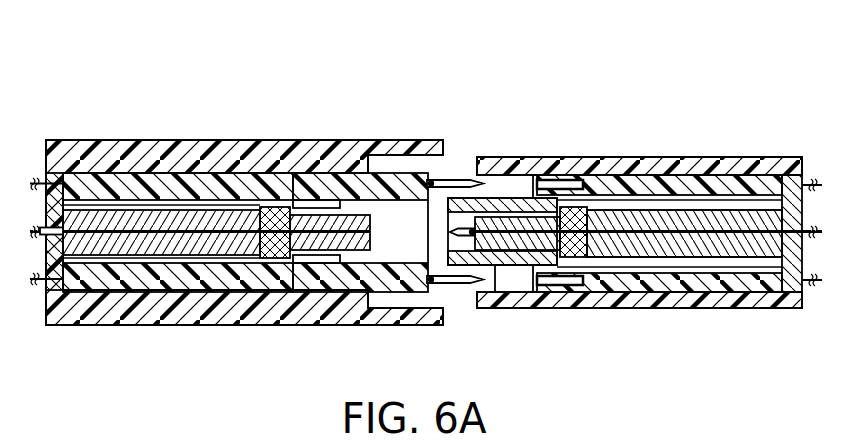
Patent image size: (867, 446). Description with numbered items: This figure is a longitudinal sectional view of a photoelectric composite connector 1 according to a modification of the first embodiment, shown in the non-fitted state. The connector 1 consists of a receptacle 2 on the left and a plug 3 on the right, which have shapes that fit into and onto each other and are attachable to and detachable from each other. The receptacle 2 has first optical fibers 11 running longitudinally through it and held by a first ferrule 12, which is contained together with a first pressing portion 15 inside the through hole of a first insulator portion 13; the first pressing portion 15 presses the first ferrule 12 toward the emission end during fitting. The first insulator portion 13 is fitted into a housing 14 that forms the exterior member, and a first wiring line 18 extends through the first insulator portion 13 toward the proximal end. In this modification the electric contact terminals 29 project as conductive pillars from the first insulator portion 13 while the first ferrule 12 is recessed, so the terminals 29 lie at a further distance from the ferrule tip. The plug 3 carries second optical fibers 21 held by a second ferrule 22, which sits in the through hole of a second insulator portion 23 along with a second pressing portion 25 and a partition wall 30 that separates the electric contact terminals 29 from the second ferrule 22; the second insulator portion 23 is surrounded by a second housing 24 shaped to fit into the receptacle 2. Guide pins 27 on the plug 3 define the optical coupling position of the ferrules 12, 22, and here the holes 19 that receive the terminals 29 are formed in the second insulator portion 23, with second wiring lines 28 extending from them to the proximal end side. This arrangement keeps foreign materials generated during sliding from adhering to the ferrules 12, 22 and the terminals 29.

The photoelectric composite connector 1 is at (430, 76).
The receptacle 2 is at (262, 98).
The plug 3 is at (594, 100).
The first optical fibers 11 is at (70, 300).
The first ferrule 12 is at (302, 210).
The first insulator portion 13 is at (230, 162).
The housing 14 is at (165, 186).
The first pressing portion 15 is at (112, 216).
The first wiring line 18 is at (338, 186).
The holes 19 is at (553, 180).
The second optical fibers 21 is at (790, 282).
The second ferrule 22 is at (578, 218).
The second insulator portion 23 is at (696, 168).
The second housing 24 is at (630, 186).
The second pressing portion 25 is at (665, 220).
The guide pins 27 is at (467, 228).
The second wiring lines 28 is at (735, 190).
The electric contact terminals 29 is at (437, 180).
The partition wall 30 is at (515, 203).